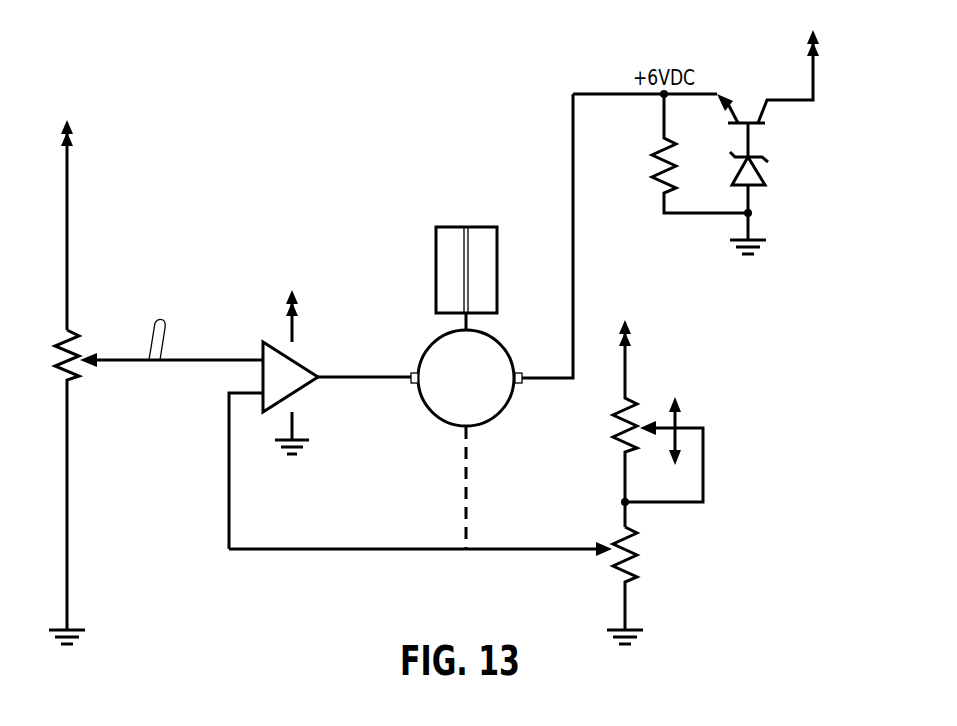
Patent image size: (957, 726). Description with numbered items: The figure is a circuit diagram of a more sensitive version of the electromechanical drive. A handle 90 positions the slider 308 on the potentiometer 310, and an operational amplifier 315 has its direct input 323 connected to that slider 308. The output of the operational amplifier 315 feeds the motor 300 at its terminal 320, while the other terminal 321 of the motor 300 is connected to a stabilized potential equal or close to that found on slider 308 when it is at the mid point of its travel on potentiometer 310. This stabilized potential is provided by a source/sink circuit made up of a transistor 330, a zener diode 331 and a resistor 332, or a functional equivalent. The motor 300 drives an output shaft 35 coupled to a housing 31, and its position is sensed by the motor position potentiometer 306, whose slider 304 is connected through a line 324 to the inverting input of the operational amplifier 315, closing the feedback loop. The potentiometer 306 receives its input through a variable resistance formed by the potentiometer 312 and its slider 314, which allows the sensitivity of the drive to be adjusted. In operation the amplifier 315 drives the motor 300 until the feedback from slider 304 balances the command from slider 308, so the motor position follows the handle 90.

The transmission housing 31 is at (440, 226).
The motor shaft 35 is at (463, 323).
The handle 90 is at (166, 345).
The motor 300 is at (508, 360).
The slider 304 is at (545, 549).
The motor position potentiometer 306 is at (636, 548).
The slider 308 is at (115, 362).
The potentiometer 310 is at (78, 342).
The potentiometer 312 is at (628, 400).
The slider 314 is at (690, 422).
The operational amplifier 315 is at (297, 365).
The terminal 320 is at (411, 380).
The terminal 321 is at (520, 386).
The direct input 323 is at (237, 356).
The inverting input line 324 is at (229, 405).
The transistor 330 is at (768, 126).
The zener diode 331 is at (762, 185).
The resistor 332 is at (653, 140).